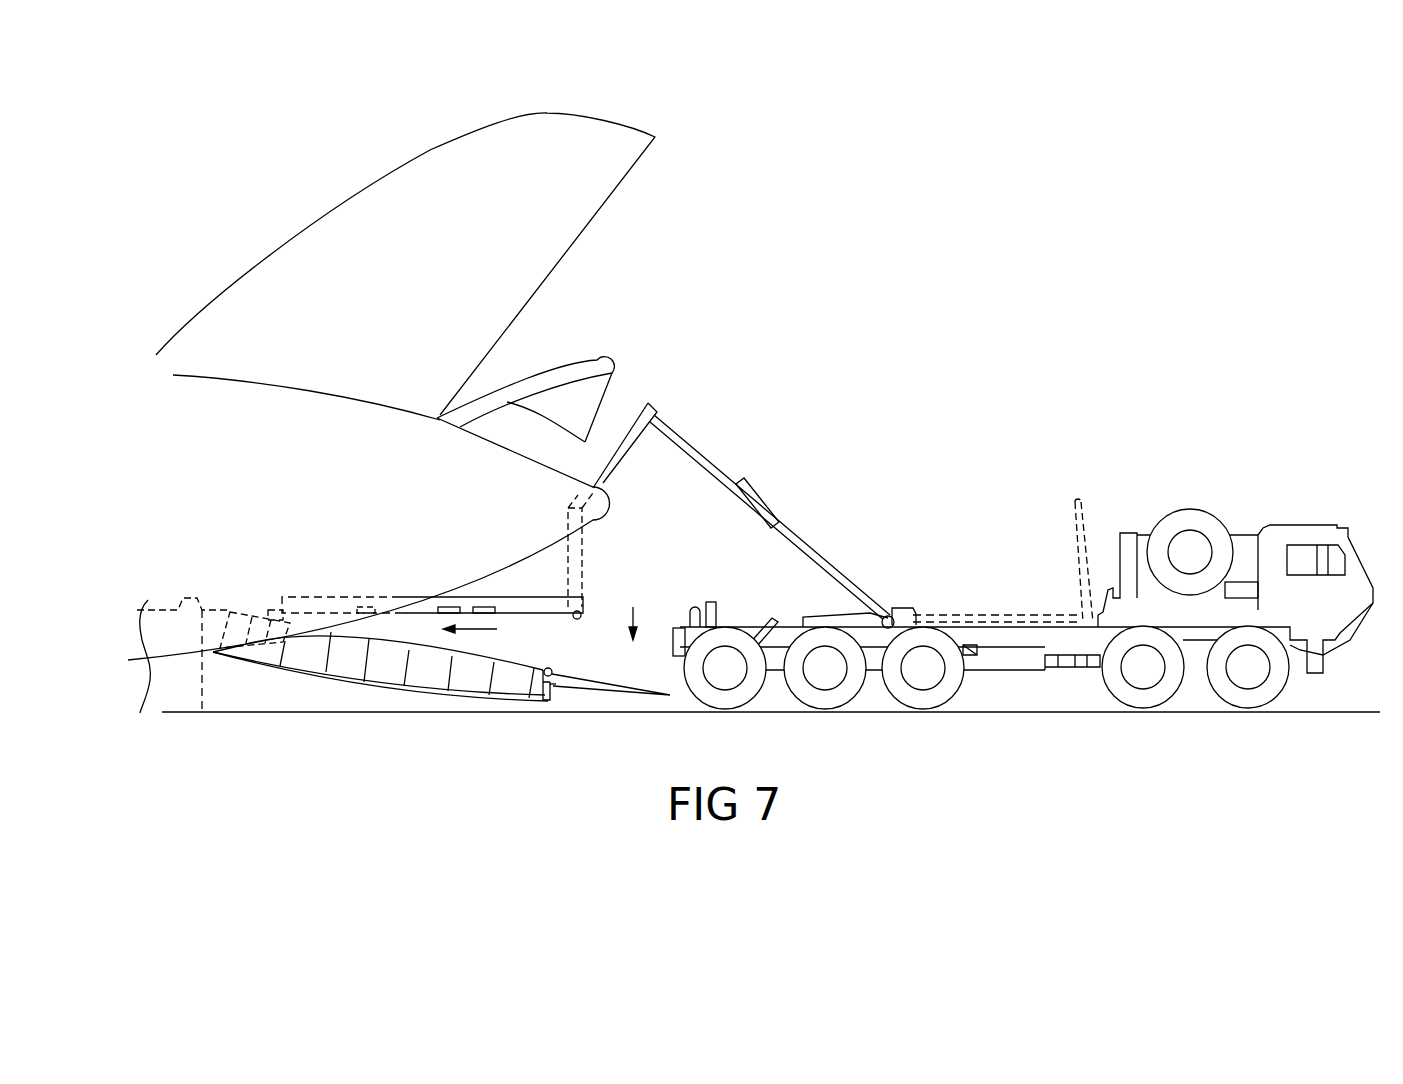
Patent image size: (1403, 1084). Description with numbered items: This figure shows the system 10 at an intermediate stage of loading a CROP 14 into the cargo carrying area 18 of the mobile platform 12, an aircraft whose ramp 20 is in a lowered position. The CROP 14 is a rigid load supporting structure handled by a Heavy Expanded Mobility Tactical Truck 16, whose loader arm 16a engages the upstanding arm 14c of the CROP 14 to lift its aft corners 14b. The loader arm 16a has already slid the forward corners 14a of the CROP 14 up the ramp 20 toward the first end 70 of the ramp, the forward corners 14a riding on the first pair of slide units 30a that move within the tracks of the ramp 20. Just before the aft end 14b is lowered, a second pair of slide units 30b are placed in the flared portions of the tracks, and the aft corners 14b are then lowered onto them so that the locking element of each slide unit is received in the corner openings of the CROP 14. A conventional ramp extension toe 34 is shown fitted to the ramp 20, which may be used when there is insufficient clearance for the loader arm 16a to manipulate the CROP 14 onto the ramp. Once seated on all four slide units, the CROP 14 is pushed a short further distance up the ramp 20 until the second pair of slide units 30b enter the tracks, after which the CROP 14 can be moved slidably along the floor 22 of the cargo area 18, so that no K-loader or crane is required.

The system 10 is at (549, 662).
The mobile platform 12 is at (580, 248).
The CROP 14 is at (522, 588).
The forward corners 14a is at (282, 603).
The aft corners 14b is at (580, 607).
The upstanding arm 14c is at (578, 538).
The Heavy Expanded Mobility Tactical Truck 16 is at (1294, 506).
The loader arm 16a is at (810, 540).
The cargo carrying area 18 is at (140, 712).
The ramp 20 is at (375, 675).
The floor 22 is at (202, 713).
The first pair of slide units 30a is at (267, 609).
The second pair of slide units 30b is at (545, 684).
The ramp extension toe 34 is at (628, 688).
The first end of the ramp 70 is at (556, 686).